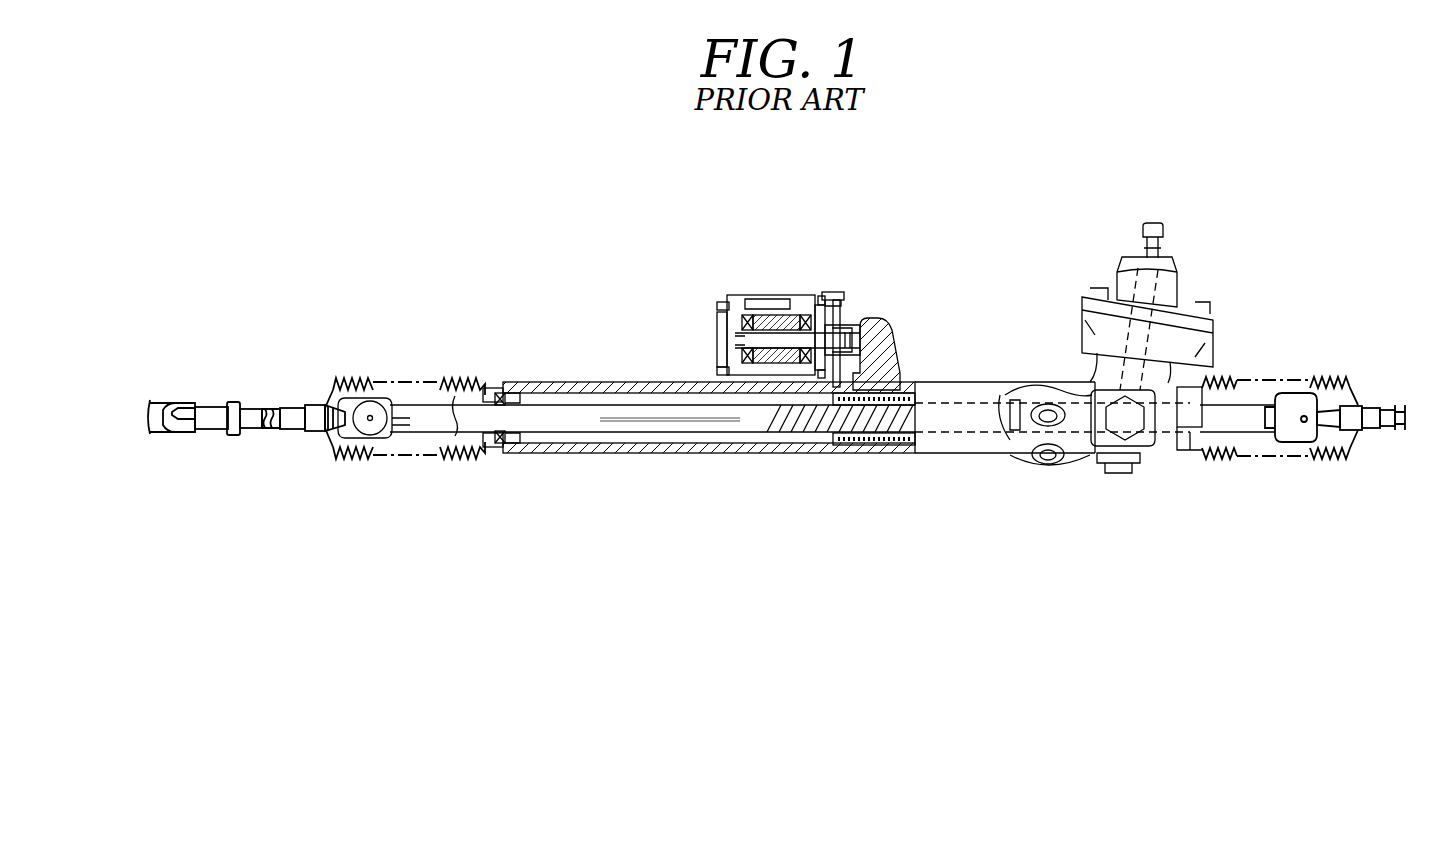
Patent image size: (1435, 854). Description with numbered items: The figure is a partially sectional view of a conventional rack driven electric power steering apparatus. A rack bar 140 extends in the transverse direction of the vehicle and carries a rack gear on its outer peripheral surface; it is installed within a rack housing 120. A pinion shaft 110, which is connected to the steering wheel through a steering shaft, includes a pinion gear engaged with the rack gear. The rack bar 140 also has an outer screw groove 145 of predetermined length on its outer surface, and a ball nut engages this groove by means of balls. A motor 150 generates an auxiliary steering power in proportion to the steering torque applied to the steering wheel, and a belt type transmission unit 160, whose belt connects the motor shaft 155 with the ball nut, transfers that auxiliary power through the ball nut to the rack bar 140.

The pinion shaft 110 is at (1143, 232).
The rack housing 120 is at (650, 445).
The rack bar 140 is at (582, 428).
The outer screw groove 145 is at (790, 440).
The motor 150 is at (770, 297).
The motor shaft 155 is at (838, 330).
The belt type transmission unit 160 is at (878, 319).